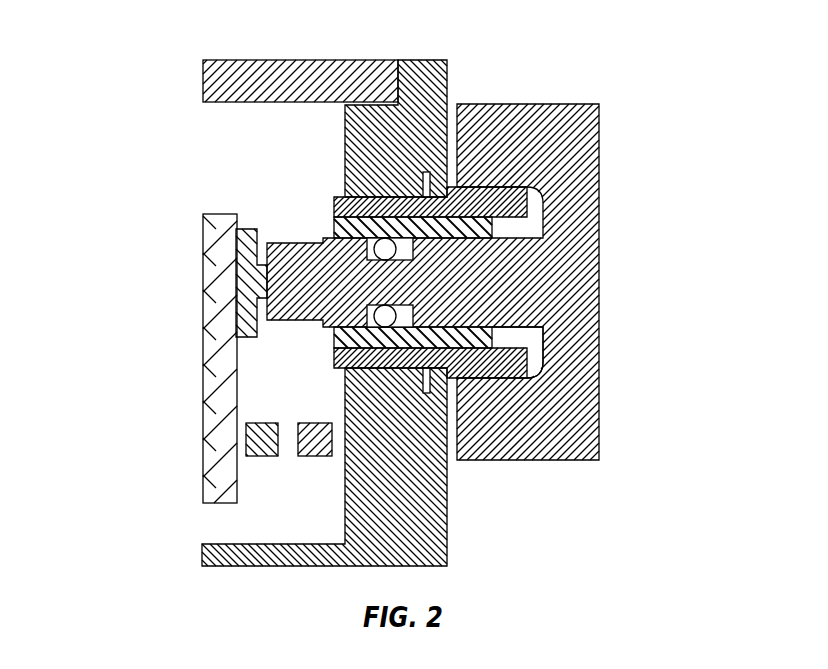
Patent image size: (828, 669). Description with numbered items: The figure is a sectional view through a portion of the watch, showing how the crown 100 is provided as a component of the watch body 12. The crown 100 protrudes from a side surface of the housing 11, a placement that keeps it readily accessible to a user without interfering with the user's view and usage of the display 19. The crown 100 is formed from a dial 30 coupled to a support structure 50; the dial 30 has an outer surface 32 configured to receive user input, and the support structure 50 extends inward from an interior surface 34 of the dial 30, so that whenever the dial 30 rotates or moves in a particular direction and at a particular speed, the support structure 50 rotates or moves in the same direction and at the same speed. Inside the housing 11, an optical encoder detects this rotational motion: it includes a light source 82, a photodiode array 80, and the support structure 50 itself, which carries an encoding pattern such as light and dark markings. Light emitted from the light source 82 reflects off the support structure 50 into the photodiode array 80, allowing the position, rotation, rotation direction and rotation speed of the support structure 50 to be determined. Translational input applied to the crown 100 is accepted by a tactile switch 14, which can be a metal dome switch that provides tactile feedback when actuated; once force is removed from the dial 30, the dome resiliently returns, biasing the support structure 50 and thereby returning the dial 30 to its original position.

The crown 100 is at (396, 288).
The housing 11 is at (447, 523).
The watch body 12 is at (165, 156).
The switch 14 is at (246, 229).
The display 19 is at (310, 78).
The dial 30 is at (587, 383).
The outer surface 32 is at (600, 362).
The interior surface 34 is at (543, 332).
The support structure 50 is at (519, 249).
The photodiode array 80 is at (263, 456).
The light source 82 is at (312, 456).